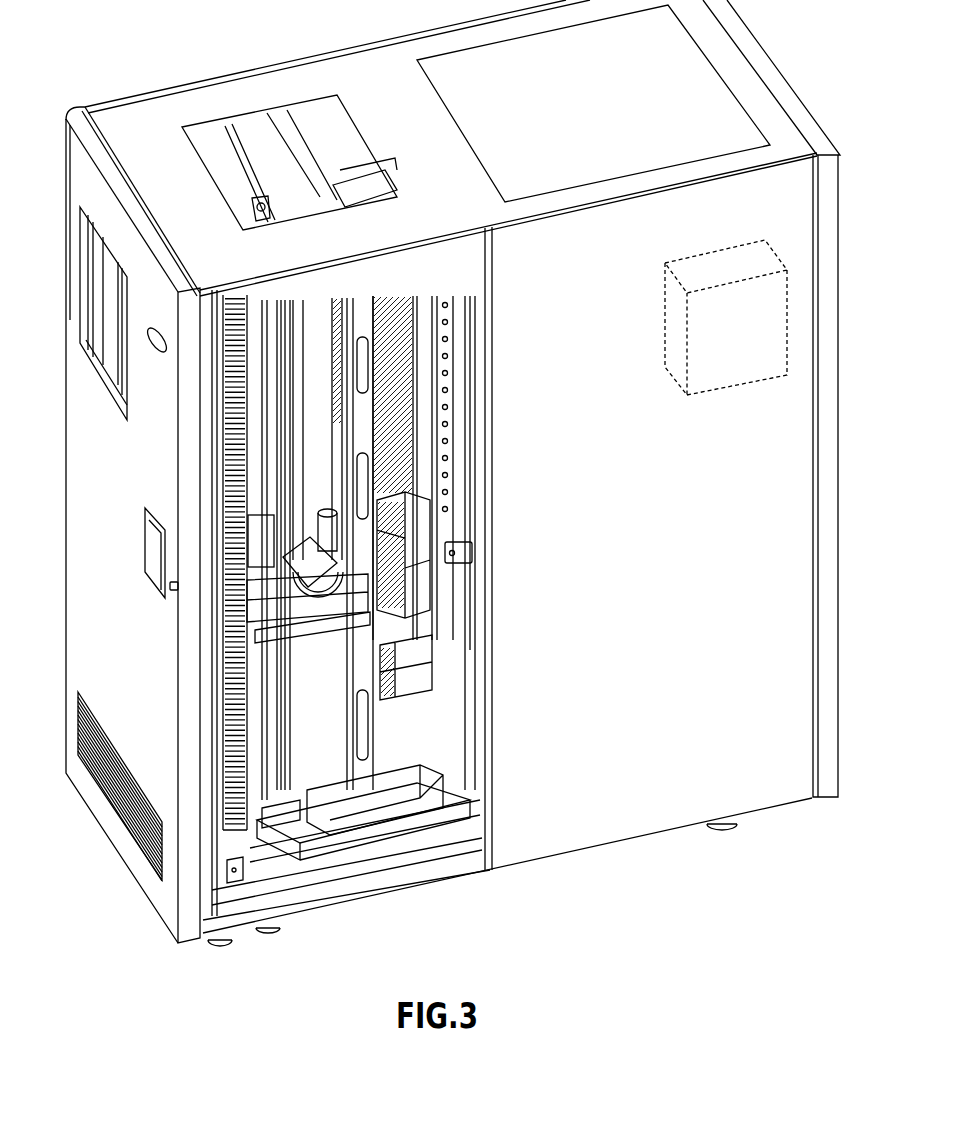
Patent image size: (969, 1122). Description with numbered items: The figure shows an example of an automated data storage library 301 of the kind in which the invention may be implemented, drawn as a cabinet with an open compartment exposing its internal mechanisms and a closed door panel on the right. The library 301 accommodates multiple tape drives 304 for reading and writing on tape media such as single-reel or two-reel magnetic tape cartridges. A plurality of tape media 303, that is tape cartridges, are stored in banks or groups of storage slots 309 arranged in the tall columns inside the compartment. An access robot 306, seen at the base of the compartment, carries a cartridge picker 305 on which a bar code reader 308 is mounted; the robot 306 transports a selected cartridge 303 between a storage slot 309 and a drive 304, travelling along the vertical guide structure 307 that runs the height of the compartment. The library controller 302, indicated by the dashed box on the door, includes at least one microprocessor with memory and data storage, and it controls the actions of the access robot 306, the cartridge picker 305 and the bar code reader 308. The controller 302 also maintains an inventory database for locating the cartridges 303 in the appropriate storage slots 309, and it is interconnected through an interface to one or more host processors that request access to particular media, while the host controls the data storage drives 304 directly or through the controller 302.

The data storage library 301 is at (453, 473).
The library controller 302 is at (667, 326).
The tape media 303 is at (413, 422).
The tape drive 304 is at (430, 610).
The cartridge picker 305 is at (415, 627).
The access robot 306 is at (310, 847).
The rack 307 is at (223, 408).
The bar code reader 308 is at (240, 540).
The storage slots 309 is at (252, 431).